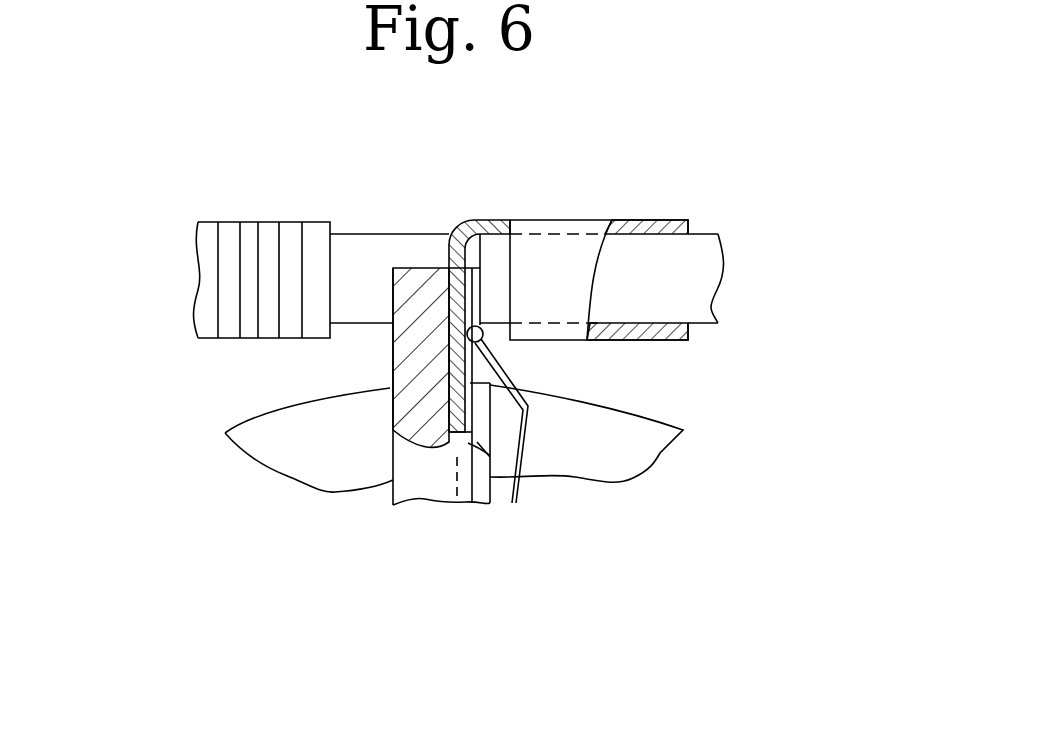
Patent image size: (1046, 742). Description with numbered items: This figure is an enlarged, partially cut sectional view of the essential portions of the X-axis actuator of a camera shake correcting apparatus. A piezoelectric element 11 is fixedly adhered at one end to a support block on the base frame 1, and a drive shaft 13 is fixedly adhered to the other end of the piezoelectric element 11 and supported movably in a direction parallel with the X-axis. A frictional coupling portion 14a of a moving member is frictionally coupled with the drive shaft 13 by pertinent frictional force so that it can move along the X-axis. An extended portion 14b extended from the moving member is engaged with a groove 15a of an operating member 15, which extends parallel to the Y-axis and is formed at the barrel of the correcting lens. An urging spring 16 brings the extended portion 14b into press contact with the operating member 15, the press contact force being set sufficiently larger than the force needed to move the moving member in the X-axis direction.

The base frame 1 is at (642, 453).
The piezoelectric element 11 is at (245, 230).
The drive shaft 13 is at (355, 250).
The frictional coupling portion 14a is at (643, 216).
The extended portion 14b is at (468, 293).
The operating member 15 is at (413, 467).
The groove 15a is at (490, 462).
The urging spring 16 is at (503, 375).